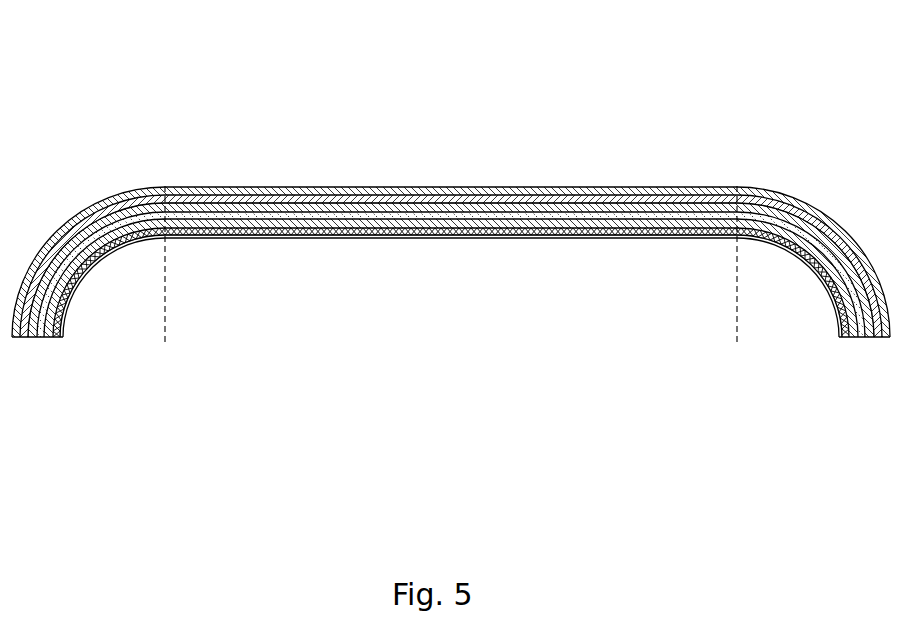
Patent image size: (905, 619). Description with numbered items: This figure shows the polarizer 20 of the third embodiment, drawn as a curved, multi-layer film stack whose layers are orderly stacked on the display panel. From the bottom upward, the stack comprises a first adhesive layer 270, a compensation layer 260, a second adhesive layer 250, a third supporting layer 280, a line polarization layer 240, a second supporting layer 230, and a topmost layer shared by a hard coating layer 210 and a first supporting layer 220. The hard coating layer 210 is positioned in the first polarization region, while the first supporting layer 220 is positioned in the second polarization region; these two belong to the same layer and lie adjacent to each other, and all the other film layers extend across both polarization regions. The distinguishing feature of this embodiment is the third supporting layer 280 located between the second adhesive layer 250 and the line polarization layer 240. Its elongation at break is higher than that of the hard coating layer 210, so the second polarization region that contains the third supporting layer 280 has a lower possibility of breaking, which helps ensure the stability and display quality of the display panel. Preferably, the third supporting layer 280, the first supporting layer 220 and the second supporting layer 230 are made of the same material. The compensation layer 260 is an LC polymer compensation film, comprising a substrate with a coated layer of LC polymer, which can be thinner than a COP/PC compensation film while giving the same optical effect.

The polarizer 20 is at (522, 547).
The hard coating layer 210 is at (377, 191).
The first supporting layer 220 is at (758, 190).
The second supporting layer 230 is at (267, 190).
The line polarization layer 240 is at (147, 202).
The second adhesive layer 250 is at (771, 240).
The compensation layer 260 is at (633, 240).
The first adhesive layer 270 is at (512, 240).
The third supporting layer 280 is at (342, 207).